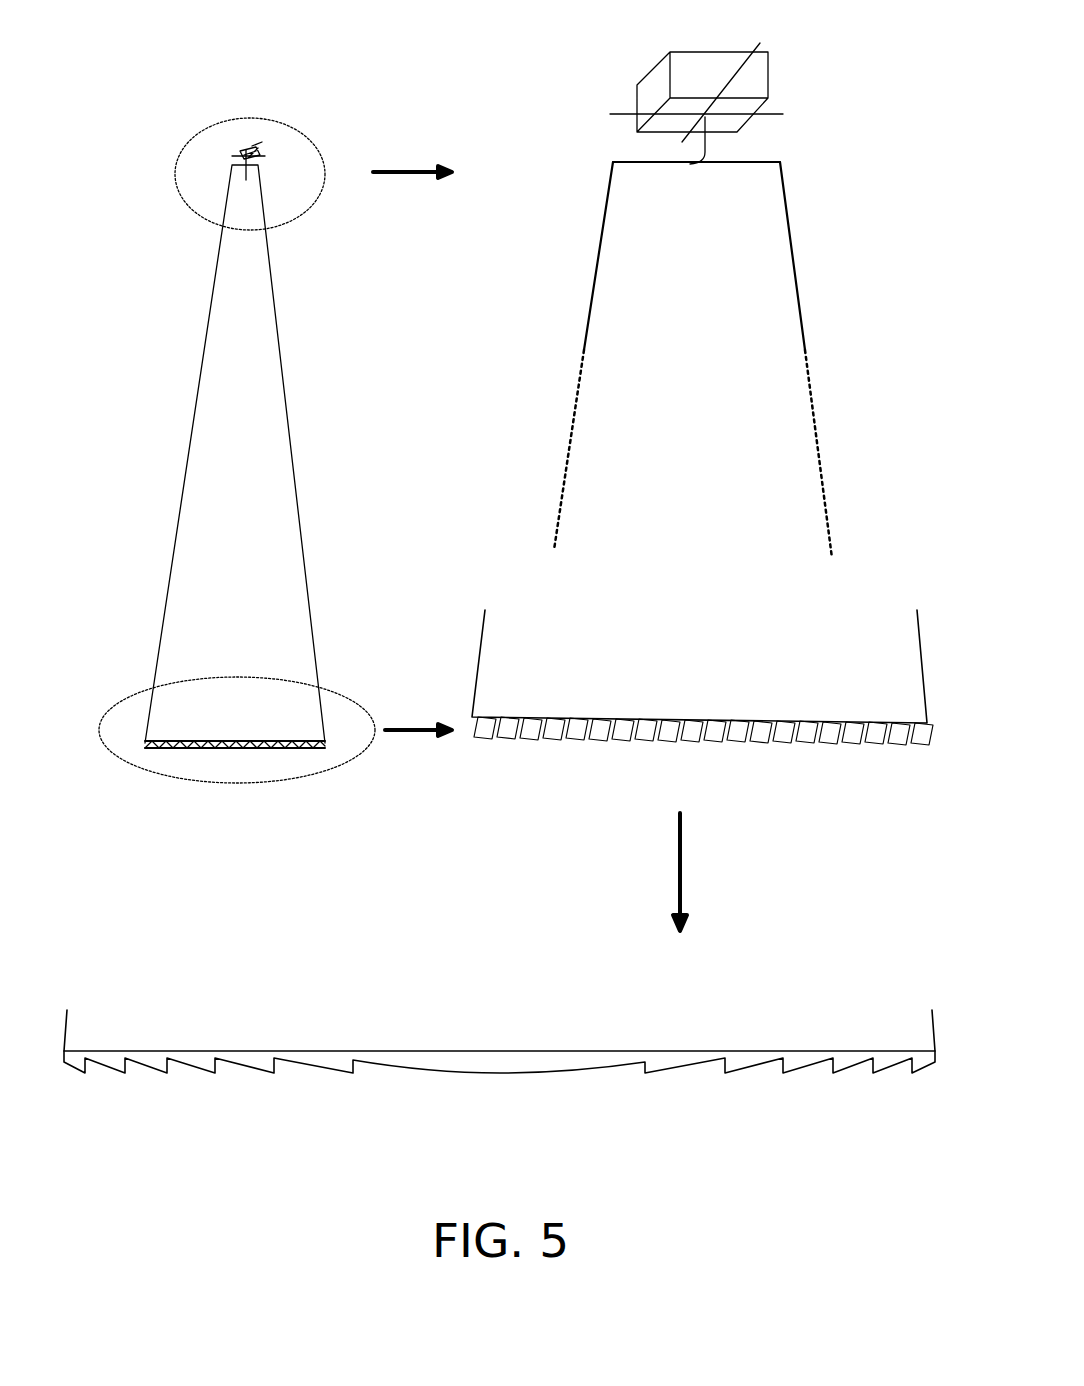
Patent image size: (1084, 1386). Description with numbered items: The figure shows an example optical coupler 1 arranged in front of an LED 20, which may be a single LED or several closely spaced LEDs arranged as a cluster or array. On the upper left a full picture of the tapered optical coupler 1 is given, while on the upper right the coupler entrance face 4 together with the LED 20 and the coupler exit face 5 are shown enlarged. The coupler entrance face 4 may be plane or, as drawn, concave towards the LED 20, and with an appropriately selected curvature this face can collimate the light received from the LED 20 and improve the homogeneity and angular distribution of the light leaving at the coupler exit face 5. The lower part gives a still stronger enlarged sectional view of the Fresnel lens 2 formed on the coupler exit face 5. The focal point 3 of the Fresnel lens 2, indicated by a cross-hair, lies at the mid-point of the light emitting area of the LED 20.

The optical coupler 1 is at (278, 340).
The Fresnel lens 2 is at (183, 748).
The focal point 3 is at (246, 180).
The coupler entrance face 4 is at (238, 156).
The coupler exit face 5 is at (165, 743).
The LED 20 is at (248, 148).